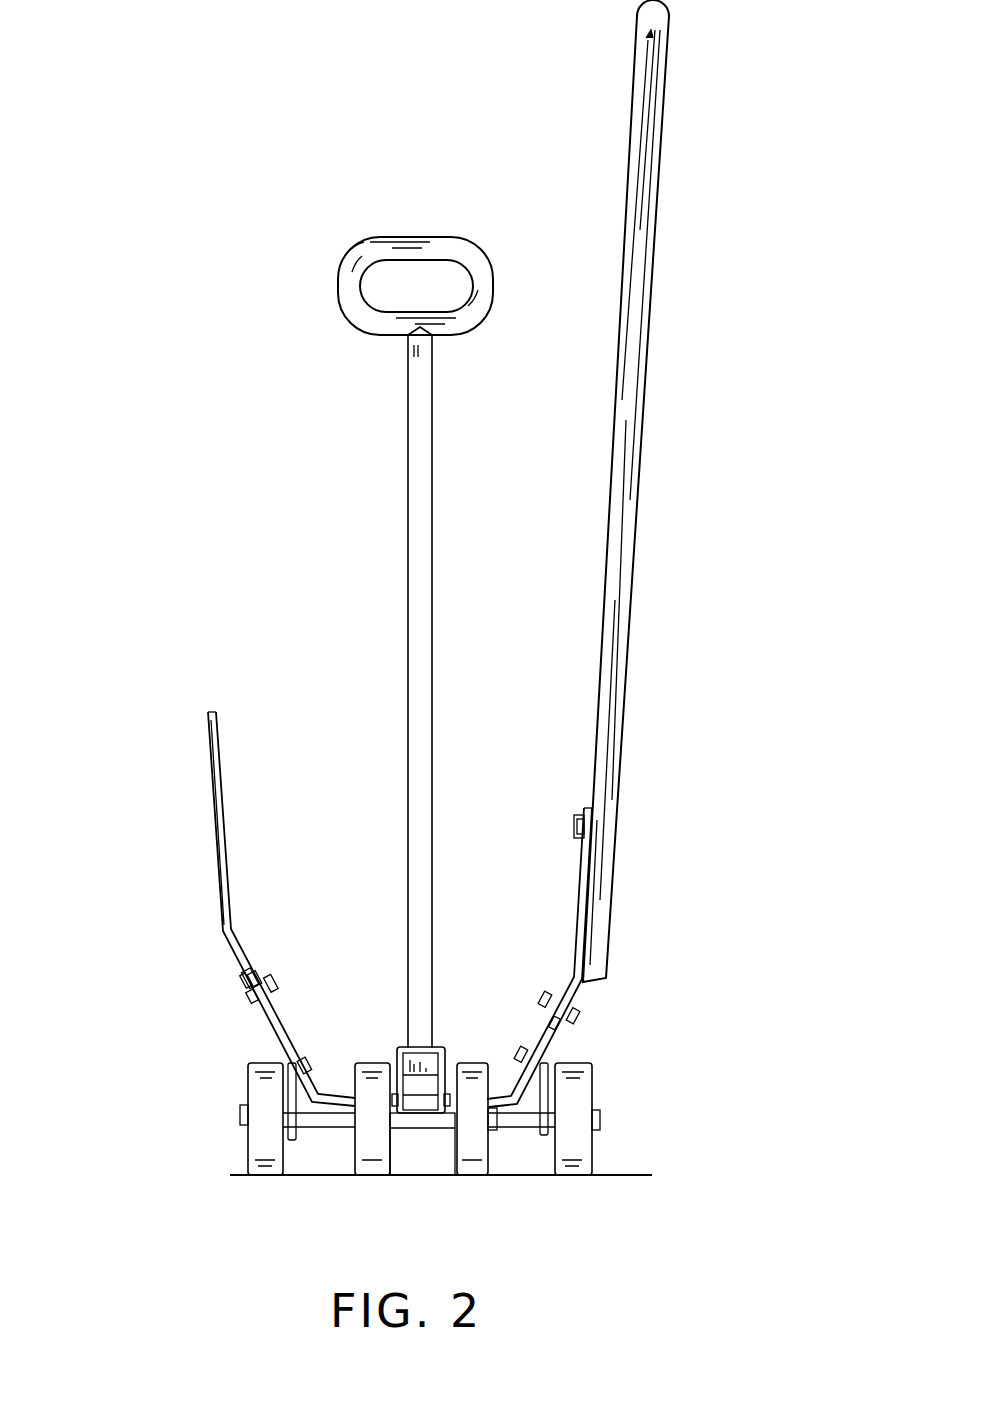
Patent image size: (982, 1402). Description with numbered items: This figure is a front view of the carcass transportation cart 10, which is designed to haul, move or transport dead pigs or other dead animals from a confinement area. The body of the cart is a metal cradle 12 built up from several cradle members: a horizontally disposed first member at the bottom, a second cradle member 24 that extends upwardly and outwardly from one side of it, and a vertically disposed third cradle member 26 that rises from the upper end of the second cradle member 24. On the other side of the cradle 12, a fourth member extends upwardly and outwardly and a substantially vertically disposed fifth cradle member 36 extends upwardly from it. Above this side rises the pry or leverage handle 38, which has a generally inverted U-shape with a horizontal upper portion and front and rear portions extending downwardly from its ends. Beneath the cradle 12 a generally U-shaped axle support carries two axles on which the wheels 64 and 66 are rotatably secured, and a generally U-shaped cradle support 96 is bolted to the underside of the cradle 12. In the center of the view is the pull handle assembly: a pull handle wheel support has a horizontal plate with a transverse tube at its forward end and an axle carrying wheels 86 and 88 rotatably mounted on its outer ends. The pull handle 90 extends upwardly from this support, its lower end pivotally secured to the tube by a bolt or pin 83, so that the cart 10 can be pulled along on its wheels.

The carcass transportation cart 10 is at (712, 700).
The cradle 12 is at (207, 945).
The second cradle member 24 is at (272, 993).
The third cradle member 26 is at (220, 836).
The fifth cradle member 36 is at (578, 885).
The pry or leverage handle 38 is at (640, 446).
The wheel 64 is at (260, 1132).
The wheel 66 is at (578, 1112).
The bolt or pin 83 is at (487, 1105).
The wheel 86 is at (366, 1130).
The wheel 88 is at (456, 1100).
The pull handle 90 is at (430, 583).
The cradle support 96 is at (566, 1035).